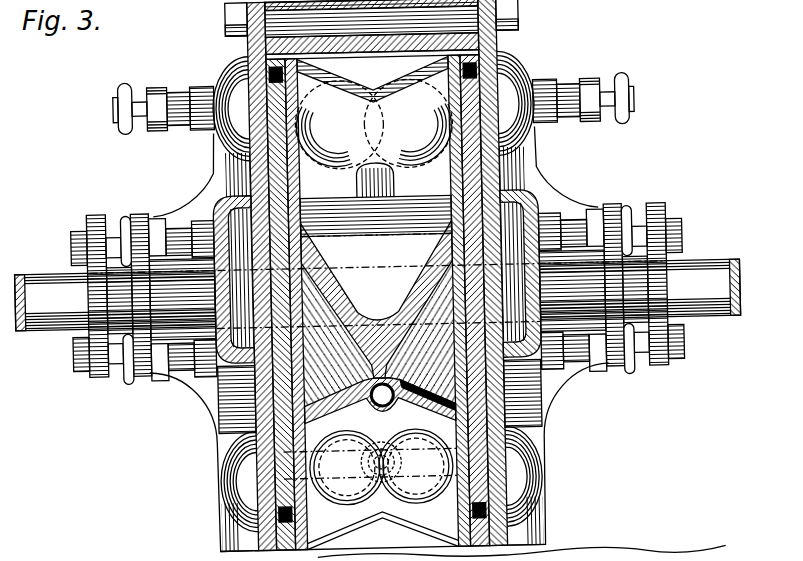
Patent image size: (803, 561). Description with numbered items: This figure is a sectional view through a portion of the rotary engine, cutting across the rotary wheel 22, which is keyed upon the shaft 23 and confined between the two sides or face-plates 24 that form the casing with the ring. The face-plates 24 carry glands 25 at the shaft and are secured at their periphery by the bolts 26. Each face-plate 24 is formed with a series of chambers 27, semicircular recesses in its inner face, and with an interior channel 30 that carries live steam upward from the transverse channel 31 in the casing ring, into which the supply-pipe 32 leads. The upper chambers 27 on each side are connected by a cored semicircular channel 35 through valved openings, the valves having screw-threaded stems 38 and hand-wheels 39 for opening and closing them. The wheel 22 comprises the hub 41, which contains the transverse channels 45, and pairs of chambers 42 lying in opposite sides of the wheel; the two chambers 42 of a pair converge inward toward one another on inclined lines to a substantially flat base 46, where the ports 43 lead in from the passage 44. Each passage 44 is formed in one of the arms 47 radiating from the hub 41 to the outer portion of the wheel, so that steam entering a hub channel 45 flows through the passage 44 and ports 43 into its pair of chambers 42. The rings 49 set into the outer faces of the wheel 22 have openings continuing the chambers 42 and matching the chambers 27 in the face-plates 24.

The rotary wheel 22 is at (523, 175).
The shaft 23 is at (40, 265).
The face-plates 24 is at (250, 37).
The glands 25 is at (653, 206).
The bolts 26 is at (531, 18).
The chambers 27 is at (237, 77).
The channel 30 is at (215, 422).
The transverse channel 31 is at (370, 467).
The supply-pipe 32 is at (381, 462).
The semicircular channel 35 is at (218, 164).
The valve-stems 38 is at (147, 115).
The hand-wheels 39 is at (131, 77).
The hub 41 is at (378, 299).
The chambers 42 is at (354, 79).
The ports 43 is at (365, 384).
The channel 44 is at (348, 174).
The channel 45 is at (401, 386).
The flat base 46 is at (331, 377).
The arms 47 is at (347, 189).
The rings 49 is at (215, 442).